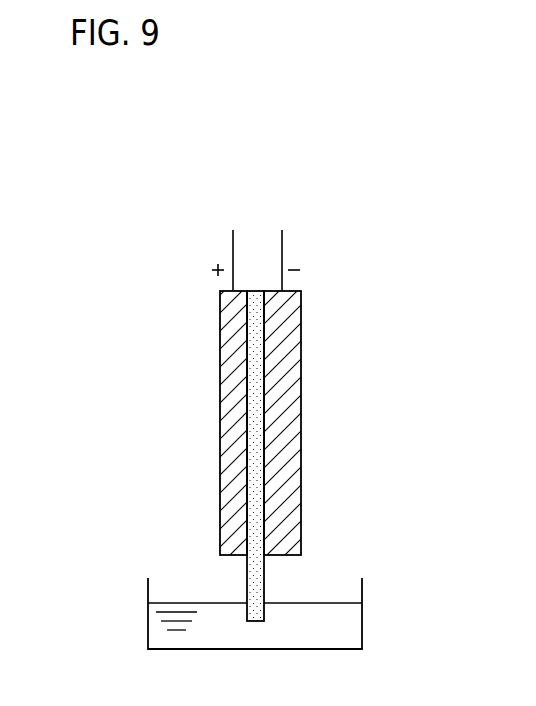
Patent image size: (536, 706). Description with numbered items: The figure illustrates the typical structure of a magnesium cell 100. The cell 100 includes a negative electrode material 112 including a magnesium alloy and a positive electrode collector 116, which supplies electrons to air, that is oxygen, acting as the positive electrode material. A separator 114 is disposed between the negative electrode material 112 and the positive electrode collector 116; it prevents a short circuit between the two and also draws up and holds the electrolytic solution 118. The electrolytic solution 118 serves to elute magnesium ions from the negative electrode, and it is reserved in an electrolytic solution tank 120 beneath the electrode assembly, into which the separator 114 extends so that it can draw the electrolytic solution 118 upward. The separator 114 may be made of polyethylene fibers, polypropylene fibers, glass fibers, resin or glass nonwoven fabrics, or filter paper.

The cell 100 is at (276, 173).
The negative electrode material 112 is at (302, 373).
The separator 114 is at (257, 426).
The positive electrode collector 116 is at (218, 381).
The electrolytic solution 118 is at (325, 610).
The electrolytic solution tank 120 is at (362, 630).